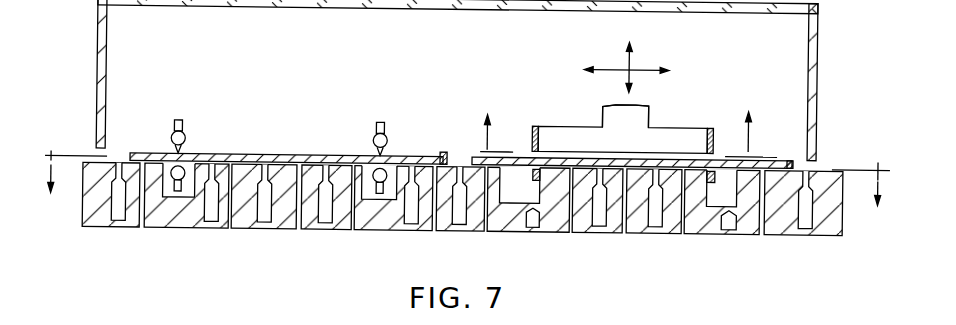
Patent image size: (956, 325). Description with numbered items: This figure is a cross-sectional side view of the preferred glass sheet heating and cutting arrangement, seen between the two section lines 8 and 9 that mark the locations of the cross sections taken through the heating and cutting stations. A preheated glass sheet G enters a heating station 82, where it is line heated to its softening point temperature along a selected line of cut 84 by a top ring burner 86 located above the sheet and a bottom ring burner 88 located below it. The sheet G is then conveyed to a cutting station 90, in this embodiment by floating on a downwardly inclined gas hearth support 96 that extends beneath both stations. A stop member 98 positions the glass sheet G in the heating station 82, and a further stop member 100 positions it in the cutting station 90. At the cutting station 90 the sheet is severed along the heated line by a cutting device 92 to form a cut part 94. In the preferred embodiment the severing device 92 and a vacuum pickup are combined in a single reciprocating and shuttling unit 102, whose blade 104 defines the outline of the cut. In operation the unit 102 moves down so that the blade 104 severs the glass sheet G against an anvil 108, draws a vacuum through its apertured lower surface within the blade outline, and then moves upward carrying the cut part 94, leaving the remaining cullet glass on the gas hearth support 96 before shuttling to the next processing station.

The section line 8- 8 is at (467, 189).
The section line 9- 9 is at (629, 119).
The heating station 82 is at (299, 73).
The line of cut 84 is at (185, 149).
The top ring burner 86 is at (182, 120).
The bottom ring burner 88 is at (175, 167).
The glass sheet G is at (246, 152).
The cutting station 90 is at (667, 35).
The cutting device 92 is at (532, 128).
The cut part 94 is at (560, 152).
The gas hearth support 96 is at (800, 227).
The stop member 98 is at (444, 149).
The stop member 100 is at (791, 151).
The reciprocating and shuttling unit 102 is at (652, 120).
The blade 104 is at (716, 130).
The anvil 108 is at (528, 206).